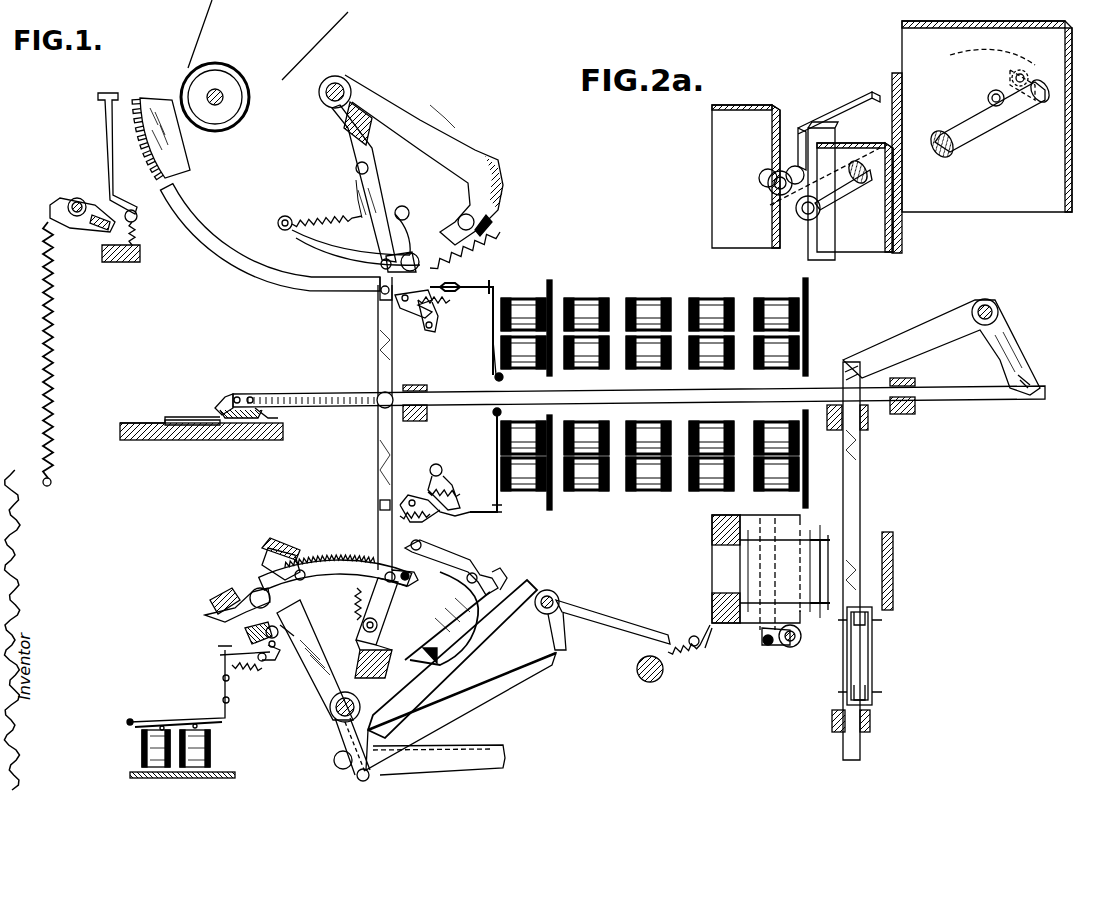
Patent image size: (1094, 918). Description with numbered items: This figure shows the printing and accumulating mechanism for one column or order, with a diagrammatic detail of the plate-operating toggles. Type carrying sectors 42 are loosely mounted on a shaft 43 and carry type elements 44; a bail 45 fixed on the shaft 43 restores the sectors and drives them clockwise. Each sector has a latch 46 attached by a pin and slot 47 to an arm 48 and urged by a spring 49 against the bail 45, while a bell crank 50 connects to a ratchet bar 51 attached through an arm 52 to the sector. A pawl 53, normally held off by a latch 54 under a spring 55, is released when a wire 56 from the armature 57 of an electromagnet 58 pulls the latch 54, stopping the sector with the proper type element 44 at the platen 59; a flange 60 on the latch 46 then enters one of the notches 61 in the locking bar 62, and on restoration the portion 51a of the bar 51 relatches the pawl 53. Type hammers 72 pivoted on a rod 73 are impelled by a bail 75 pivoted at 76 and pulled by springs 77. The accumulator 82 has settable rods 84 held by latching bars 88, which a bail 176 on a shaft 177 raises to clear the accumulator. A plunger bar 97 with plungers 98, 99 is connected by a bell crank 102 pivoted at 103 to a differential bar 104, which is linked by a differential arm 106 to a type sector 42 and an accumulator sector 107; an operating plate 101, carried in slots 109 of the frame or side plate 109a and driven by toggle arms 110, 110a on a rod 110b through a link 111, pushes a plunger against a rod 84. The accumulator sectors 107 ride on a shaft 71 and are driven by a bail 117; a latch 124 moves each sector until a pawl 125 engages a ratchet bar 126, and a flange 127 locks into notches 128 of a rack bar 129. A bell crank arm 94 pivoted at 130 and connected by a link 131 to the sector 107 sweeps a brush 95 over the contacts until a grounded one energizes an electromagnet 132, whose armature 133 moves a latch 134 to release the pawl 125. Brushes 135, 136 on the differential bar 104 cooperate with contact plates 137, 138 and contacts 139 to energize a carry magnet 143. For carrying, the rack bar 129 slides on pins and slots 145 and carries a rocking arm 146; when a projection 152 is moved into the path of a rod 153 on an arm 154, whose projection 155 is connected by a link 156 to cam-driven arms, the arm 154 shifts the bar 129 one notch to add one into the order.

In FIG. 1, the type carrying sector 42 is at (280, 272).
In FIG. 1, the shaft 43 is at (338, 82).
In FIG. 1, the type elements 44 is at (192, 140).
In FIG. 1, the bail 45 is at (345, 125).
In FIG. 1, the latch 46 is at (352, 155).
In FIG. 1, the pin and slot 47 is at (378, 178).
In FIG. 1, the arm 48 is at (440, 148).
In FIG. 1, the spring 49 is at (355, 187).
In FIG. 1, the bell crank 50 is at (402, 250).
In FIG. 1, the ratchet bar 51 is at (478, 246).
In FIG. 1, the portion of ratchet bar 51a is at (361, 290).
In FIG. 1, the arm 52 is at (493, 224).
In FIG. 1, the pawl 53 is at (418, 288).
In FIG. 1, the latch 54 is at (440, 304).
In FIG. 1, the spring 55 is at (418, 318).
In FIG. 1, the wire 56 is at (478, 288).
In FIG. 1, the armature 57 is at (492, 327).
In FIG. 1, the electromagnet 58 is at (522, 305).
In FIG. 1, the platen 59 is at (228, 78).
In FIG. 1, the flange 60 is at (340, 218).
In FIG. 1, the notches 61 is at (300, 214).
In FIG. 1, the locking bar 62 is at (292, 232).
In FIG. 1, the shaft 71 is at (330, 712).
In FIG. 1, the type hammers 72 is at (104, 103).
In FIG. 1, the rod 73 is at (138, 216).
In FIG. 1, the bail 75 is at (100, 242).
In FIG. 1, the pivot 76 is at (77, 198).
In FIG. 1, the springs 77 is at (54, 328).
In FIG. 1, the accumulator 82 is at (730, 625).
In FIG. 1, the settable rods 84 is at (828, 538).
In FIG. 1, the latching bar 88 is at (765, 568).
In FIG. 1, the bell crank arm 94 is at (610, 614).
In FIG. 1, the brush 95 is at (705, 625).
In FIG. 1, the plunger bar 97 is at (862, 492).
In FIG. 1, the plunger 98 is at (882, 624).
In FIG. 1, the plunger 99 is at (884, 692).
In FIG. 1, the operating plate 101 is at (896, 566).
In FIG. 2a, the operating plate 101 is at (882, 88).
In FIG. 1, the bell crank 102 is at (902, 344).
In FIG. 1, the pivot 103 is at (985, 298).
In FIG. 1, the differential bar 104 is at (320, 395).
In FIG. 1, the differential arm 106 is at (376, 440).
In FIG. 1, the accumulator sector 107 is at (505, 590).
In FIG. 2a, the slots 109 is at (760, 172).
In FIG. 2a, the block 109a is at (880, 238).
In FIG. 2a, the toggle arms 110 is at (794, 200).
In FIG. 2a, the toggle arms 110a is at (987, 116).
In FIG. 2a, the rod 110b is at (978, 130).
In FIG. 2a, the link 111 is at (825, 252).
In FIG. 1, the bail 117 is at (410, 683).
In FIG. 1, the latch 124 is at (385, 614).
In FIG. 1, the pawl 125 is at (432, 516).
In FIG. 1, the ratchet bar 126 is at (470, 550).
In FIG. 1, the flange 127 is at (386, 596).
In FIG. 1, the notches 128 is at (340, 602).
In FIG. 1, the rack bar 129 is at (322, 565).
In FIG. 1, the pivot 130 is at (555, 592).
In FIG. 1, the link 131 is at (510, 692).
In FIG. 1, the electromagnet 132 is at (497, 437).
In FIG. 1, the armature 133 is at (494, 493).
In FIG. 1, the latch 134 is at (455, 480).
In FIG. 1, the contact finger 135 is at (222, 408).
In FIG. 1, the contact finger 136 is at (280, 418).
In FIG. 1, the contact plate 137 is at (243, 440).
In FIG. 1, the contact plate 138 is at (185, 420).
In FIG. 1, the contact 139 is at (135, 420).
In FIG. 1, the carry electromagnet 143 is at (150, 750).
In FIG. 1, the pins and slots 145 is at (415, 580).
In FIG. 1, the rocking arm 146 is at (255, 590).
In FIG. 1, the projection 152 is at (208, 616).
In FIG. 1, the rod 153 is at (244, 635).
In FIG. 1, the arm 154 is at (322, 666).
In FIG. 1, the projection 155 is at (336, 750).
In FIG. 1, the link 156 is at (486, 748).
In FIG. 1, the bail 176 is at (772, 646).
In FIG. 1, the shaft 177 is at (798, 644).